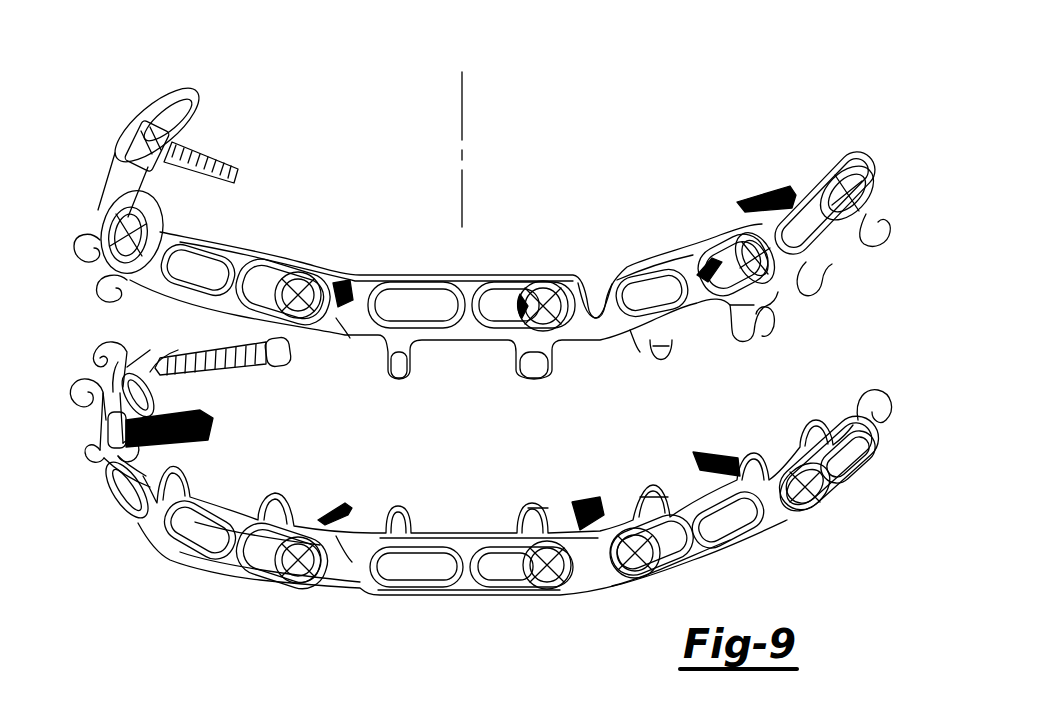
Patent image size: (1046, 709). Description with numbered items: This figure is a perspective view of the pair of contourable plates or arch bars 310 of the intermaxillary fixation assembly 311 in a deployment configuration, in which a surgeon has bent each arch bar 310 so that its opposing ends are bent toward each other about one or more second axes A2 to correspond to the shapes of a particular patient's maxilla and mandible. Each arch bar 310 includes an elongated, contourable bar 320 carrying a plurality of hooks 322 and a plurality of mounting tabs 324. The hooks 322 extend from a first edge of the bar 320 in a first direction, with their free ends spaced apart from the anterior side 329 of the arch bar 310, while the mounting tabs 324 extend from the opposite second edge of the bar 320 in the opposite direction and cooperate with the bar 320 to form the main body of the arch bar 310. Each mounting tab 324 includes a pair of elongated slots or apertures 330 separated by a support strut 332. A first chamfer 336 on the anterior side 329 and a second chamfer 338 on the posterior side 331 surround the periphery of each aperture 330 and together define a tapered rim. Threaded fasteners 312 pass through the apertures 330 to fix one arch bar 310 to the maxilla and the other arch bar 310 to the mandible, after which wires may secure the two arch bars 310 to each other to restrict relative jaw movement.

The contourable plate or arch bar 310 is at (886, 140).
The intermaxillary fixation assembly 311 is at (740, 98).
The threaded fastener 312 is at (764, 188).
The elongated contourable bar 320 is at (337, 328).
The hook 322 is at (764, 372).
The mounting tab 324 is at (710, 240).
The anterior side 329 is at (592, 326).
The elongated slot or aperture 330 is at (262, 278).
The posterior side 331 is at (158, 104).
The support strut 332 is at (467, 300).
The first chamfer 336 is at (490, 298).
The second chamfer 338 is at (195, 120).
The second axis A2 is at (462, 108).